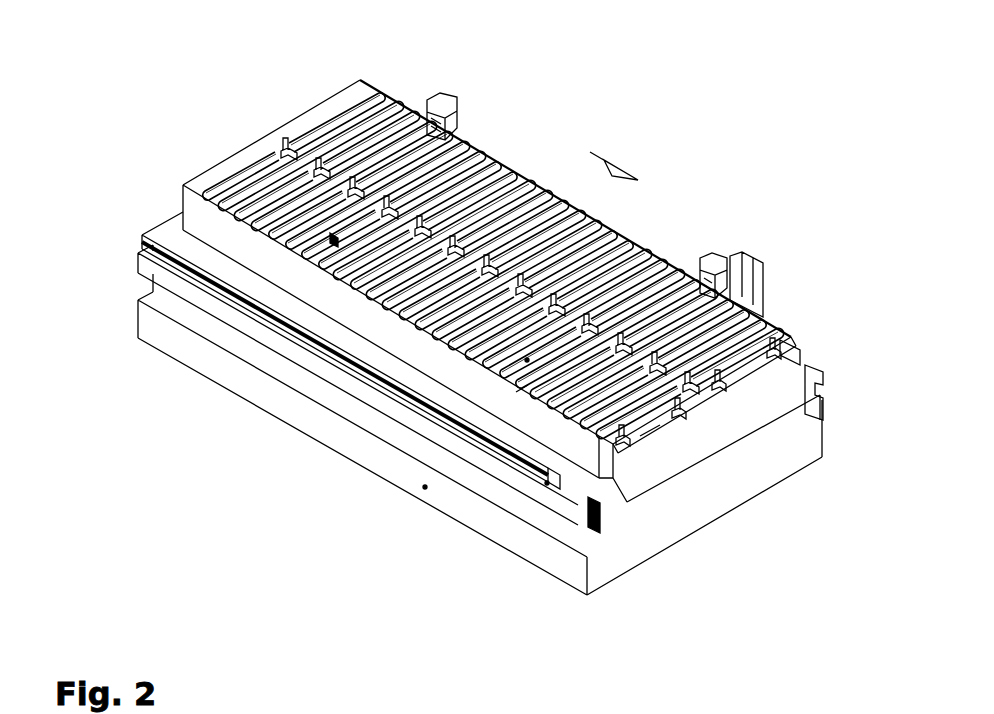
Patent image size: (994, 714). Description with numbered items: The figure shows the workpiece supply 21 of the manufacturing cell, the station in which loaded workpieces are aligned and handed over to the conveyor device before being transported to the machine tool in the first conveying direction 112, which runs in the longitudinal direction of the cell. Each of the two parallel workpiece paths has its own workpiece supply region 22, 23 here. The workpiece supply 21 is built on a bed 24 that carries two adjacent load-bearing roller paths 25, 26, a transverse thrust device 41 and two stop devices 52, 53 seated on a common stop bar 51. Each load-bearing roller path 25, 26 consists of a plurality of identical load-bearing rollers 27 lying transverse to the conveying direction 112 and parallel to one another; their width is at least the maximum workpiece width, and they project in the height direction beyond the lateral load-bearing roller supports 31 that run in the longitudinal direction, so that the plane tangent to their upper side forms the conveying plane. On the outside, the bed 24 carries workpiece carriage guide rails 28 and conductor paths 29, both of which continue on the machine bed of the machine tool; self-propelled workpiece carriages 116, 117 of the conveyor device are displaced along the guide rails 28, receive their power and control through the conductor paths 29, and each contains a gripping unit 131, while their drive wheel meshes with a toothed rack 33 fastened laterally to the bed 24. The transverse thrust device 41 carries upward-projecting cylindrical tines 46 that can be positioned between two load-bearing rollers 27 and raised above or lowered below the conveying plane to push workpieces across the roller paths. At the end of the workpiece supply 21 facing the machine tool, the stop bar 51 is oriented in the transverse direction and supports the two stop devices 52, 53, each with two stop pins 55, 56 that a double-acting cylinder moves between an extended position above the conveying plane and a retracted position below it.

The workpiece supply 21 is at (255, 423).
The workpiece supply region 22 is at (207, 165).
The workpiece supply region 23 is at (303, 113).
The bed 24 is at (425, 487).
The load-bearing roller path 25 is at (527, 360).
The load-bearing roller path 26 is at (530, 200).
The load-bearing roller 27 is at (393, 280).
The workpiece carriage guide rail 28 is at (287, 316).
The conductor path 29 is at (598, 505).
The load-bearing roller support 31 is at (193, 212).
The toothed rack 33 is at (547, 483).
The transverse thrust device 41 is at (333, 242).
The tine 46 is at (478, 248).
The stop bar 51 is at (665, 430).
The stop device 52 is at (677, 410).
The stop device 53 is at (723, 395).
The stop pin 55 is at (623, 447).
The stop pin 56 is at (782, 385).
The first conveying direction 112 is at (615, 167).
The workpiece carriage 116 is at (442, 98).
The workpiece carriage 117 is at (752, 257).
The gripping unit 131 is at (707, 253).